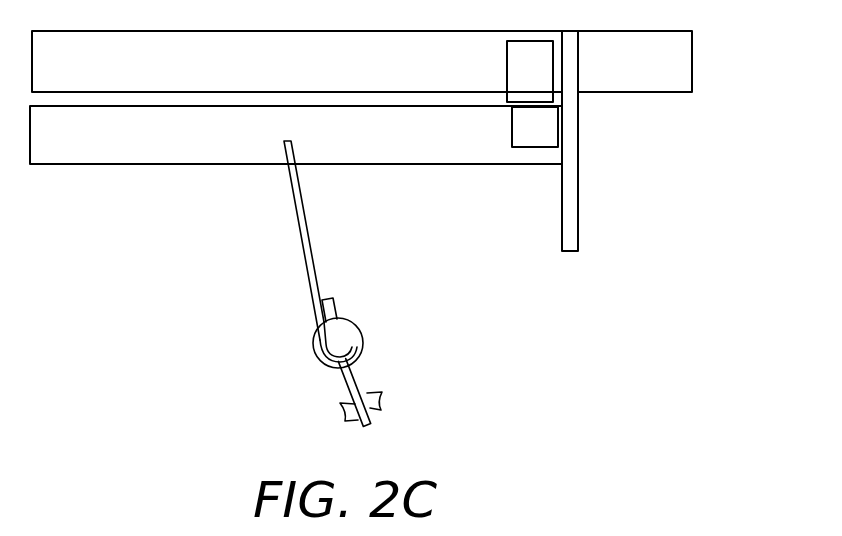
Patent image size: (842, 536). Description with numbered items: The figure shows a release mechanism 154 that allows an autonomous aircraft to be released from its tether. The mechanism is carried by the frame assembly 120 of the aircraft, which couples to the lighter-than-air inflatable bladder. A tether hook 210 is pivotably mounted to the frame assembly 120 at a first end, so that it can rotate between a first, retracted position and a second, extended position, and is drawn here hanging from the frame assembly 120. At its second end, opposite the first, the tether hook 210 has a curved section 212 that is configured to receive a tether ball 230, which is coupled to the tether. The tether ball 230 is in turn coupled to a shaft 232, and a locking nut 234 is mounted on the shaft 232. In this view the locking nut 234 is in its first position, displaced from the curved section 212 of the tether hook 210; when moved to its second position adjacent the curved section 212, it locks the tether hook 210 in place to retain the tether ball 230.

The frame assembly 120 is at (416, 163).
The release mechanism 154 is at (245, 276).
The tether hooks 210 is at (309, 234).
The curved section 212 is at (322, 371).
The tether ball 230 is at (337, 321).
The shaft 232 is at (362, 376).
The locking nut 234 is at (378, 404).